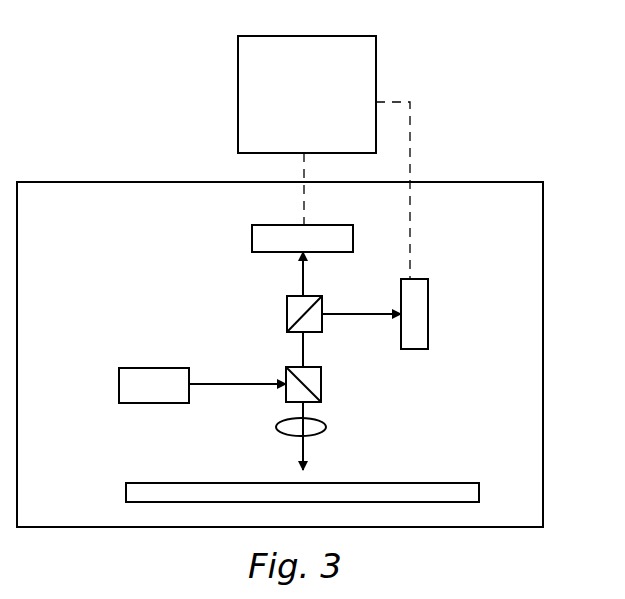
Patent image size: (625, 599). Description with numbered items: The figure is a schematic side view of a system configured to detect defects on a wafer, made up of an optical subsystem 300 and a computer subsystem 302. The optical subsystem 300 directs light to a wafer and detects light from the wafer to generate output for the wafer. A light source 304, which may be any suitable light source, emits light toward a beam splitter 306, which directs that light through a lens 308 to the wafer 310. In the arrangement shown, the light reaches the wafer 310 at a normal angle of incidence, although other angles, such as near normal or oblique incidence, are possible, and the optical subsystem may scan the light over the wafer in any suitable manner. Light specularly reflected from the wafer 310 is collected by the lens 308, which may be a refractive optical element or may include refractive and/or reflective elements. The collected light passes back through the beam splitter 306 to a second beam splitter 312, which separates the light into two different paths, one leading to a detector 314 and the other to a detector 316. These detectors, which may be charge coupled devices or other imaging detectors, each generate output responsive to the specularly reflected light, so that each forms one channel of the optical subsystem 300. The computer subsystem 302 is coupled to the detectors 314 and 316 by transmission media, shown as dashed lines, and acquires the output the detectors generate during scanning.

The optical subsystem 300 is at (543, 295).
The computer subsystem 302 is at (289, 132).
The light source 304 is at (119, 385).
The beam splitter 306 is at (321, 385).
The lens 308 is at (327, 427).
The wafer 310 is at (138, 483).
The beam splitter 312 is at (287, 313).
The detector 314 is at (252, 245).
The detector 316 is at (428, 295).